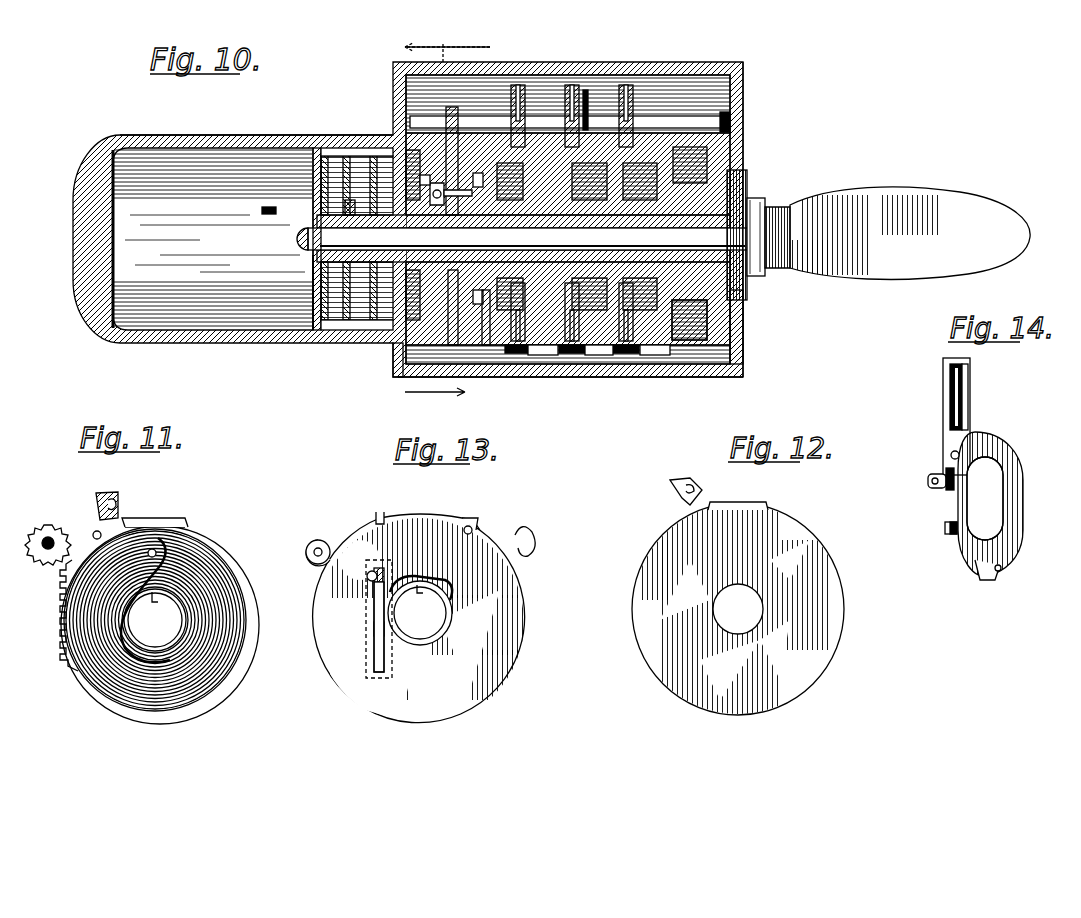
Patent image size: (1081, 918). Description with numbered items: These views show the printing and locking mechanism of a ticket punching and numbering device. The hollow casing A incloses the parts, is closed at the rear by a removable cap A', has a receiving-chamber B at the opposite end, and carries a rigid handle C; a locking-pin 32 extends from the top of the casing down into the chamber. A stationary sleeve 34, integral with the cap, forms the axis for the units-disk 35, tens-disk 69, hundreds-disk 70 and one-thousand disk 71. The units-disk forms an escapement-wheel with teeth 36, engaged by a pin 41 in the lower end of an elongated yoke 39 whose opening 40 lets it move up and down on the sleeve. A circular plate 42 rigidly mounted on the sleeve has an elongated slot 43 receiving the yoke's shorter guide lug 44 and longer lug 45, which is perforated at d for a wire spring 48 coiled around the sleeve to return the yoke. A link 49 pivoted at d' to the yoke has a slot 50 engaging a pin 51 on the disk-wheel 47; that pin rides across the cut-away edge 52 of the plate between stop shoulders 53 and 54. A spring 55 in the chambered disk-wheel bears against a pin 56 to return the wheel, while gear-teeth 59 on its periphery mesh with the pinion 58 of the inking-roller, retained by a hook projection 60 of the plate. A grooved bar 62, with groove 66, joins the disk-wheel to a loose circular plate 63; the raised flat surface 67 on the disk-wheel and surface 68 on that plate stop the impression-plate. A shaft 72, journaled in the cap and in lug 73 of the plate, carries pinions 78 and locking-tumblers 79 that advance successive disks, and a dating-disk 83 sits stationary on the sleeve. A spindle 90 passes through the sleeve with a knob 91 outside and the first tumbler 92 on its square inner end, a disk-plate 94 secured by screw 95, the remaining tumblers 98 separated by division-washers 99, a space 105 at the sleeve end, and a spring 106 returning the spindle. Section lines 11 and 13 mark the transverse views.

In FIG. 10, the section line 11 is at (447, 43).
In FIG. 10, the section line 13 is at (435, 396).
In FIG. 10, the locking-pin 32 is at (265, 215).
In FIG. 10, the stationary sleeve 34 is at (690, 316).
In FIG. 10, the units-disk 35 is at (497, 335).
In FIG. 10, the escapement teeth 36 is at (425, 208).
In FIG. 14, the yoke 39 is at (1002, 506).
In FIG. 14, the opening 40 is at (990, 500).
In FIG. 14, the pin 41 is at (998, 572).
In FIG. 10, the circular plate 42 is at (455, 335).
In FIG. 13, the circular plate 42 is at (361, 619).
In FIG. 10, the elongated slot 43 is at (442, 206).
In FIG. 13, the elongated slot 43 is at (380, 665).
In FIG. 13, the shorter lug 44 is at (374, 630).
In FIG. 14, the shorter lug 44 is at (945, 530).
In FIG. 13, the longer lug 45 is at (366, 580).
In FIG. 14, the longer lug 45 is at (928, 487).
In FIG. 10, the disk-wheel 47 is at (395, 345).
In FIG. 11, the disk-wheel 47 is at (176, 722).
In FIG. 13, the wire spring 48 is at (452, 598).
In FIG. 13, the link 49 is at (465, 528).
In FIG. 14, the link 49 is at (943, 378).
In FIG. 14, the slot 50 is at (966, 395).
In FIG. 11, the pin 51 is at (92, 533).
In FIG. 13, the cut-away edge 52 is at (394, 518).
In FIG. 13, the shoulder 53 is at (380, 513).
In FIG. 13, the shoulder 54 is at (478, 523).
In FIG. 11, the spring 55 is at (120, 645).
In FIG. 11, the pin 56 is at (165, 547).
In FIG. 11, the pinion 58 is at (35, 537).
In FIG. 10, the gear-teeth 59 is at (403, 376).
In FIG. 11, the gear-teeth 59 is at (38, 605).
In FIG. 13, the hook projection 60 is at (533, 540).
In FIG. 11, the bar 62 is at (123, 483).
In FIG. 12, the bar 62 is at (675, 480).
In FIG. 10, the circular plate 63 is at (718, 320).
In FIG. 12, the circular plate 63 is at (738, 610).
In FIG. 11, the groove 66 is at (95, 508).
In FIG. 12, the groove 66 is at (685, 495).
In FIG. 11, the raised flat surface 67 is at (172, 518).
In FIG. 12, the flat surface 68 is at (729, 503).
In FIG. 10, the tens-disk 69 is at (548, 336).
In FIG. 10, the hundreds-disk 70 is at (598, 336).
In FIG. 10, the one-thousand disk 71 is at (652, 336).
In FIG. 10, the shaft 72 is at (660, 120).
In FIG. 10, the lug 73 is at (450, 108).
In FIG. 13, the lug 73 is at (314, 540).
In FIG. 10, the pinions 78 is at (626, 84).
In FIG. 10, the locking-tumblers 79 is at (572, 84).
In FIG. 10, the dating-disk 83 is at (684, 186).
In FIG. 10, the spindle 90 is at (528, 239).
In FIG. 10, the knob 91 is at (757, 200).
In FIG. 10, the first tumbler 92 is at (327, 148).
In FIG. 10, the disk-plate 94 is at (311, 147).
In FIG. 10, the screw 95 is at (305, 250).
In FIG. 10, the tumblers 98 is at (380, 147).
In FIG. 10, the division-washers 99 is at (348, 207).
In FIG. 10, the space 105 is at (313, 268).
In FIG. 10, the spring 106 is at (755, 268).
In FIG. 10, the casing A is at (350, 263).
In FIG. 10, the removable cap A' is at (772, 219).
In FIG. 10, the receiving-chamber B is at (212, 239).
In FIG. 10, the handle C is at (910, 233).
In FIG. 14, the perforation d is at (921, 468).
In FIG. 14, the pivot d' is at (996, 434).